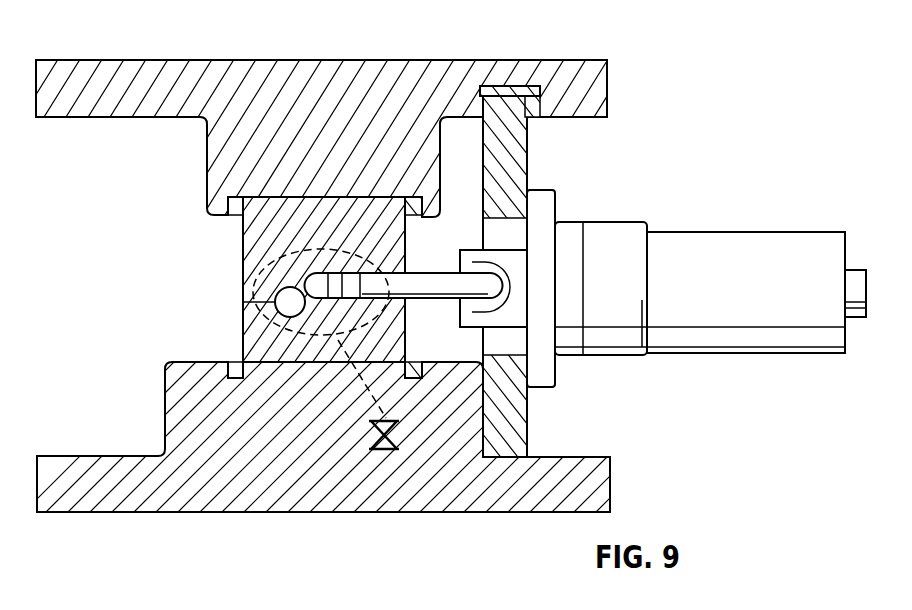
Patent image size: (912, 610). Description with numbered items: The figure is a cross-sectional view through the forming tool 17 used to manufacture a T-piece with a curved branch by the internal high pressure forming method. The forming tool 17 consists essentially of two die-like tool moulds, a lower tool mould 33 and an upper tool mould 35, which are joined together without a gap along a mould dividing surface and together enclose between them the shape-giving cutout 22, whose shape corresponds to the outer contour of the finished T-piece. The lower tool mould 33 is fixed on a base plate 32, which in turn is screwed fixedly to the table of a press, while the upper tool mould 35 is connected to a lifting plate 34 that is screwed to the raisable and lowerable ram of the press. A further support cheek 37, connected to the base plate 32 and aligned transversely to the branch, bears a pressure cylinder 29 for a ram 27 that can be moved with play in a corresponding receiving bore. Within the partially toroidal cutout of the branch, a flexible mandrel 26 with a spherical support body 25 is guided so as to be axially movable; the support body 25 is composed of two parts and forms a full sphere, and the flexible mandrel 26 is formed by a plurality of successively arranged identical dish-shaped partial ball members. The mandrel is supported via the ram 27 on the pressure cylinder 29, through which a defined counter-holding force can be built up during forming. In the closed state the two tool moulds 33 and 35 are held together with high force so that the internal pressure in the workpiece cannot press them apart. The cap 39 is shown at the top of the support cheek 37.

The forming tool 17 is at (96, 230).
The cutout 22 is at (284, 313).
The support body 25 is at (330, 275).
The flexible mandrel 26 is at (352, 260).
The ram 27 is at (423, 288).
The pressure cylinder 29 is at (745, 240).
The base plate 32 is at (300, 499).
The lower tool mould 33 is at (258, 347).
The lifting plate 34 is at (285, 82).
The upper tool mould 35 is at (257, 242).
The further support cheek 37 is at (517, 152).
The cap 39 is at (492, 85).